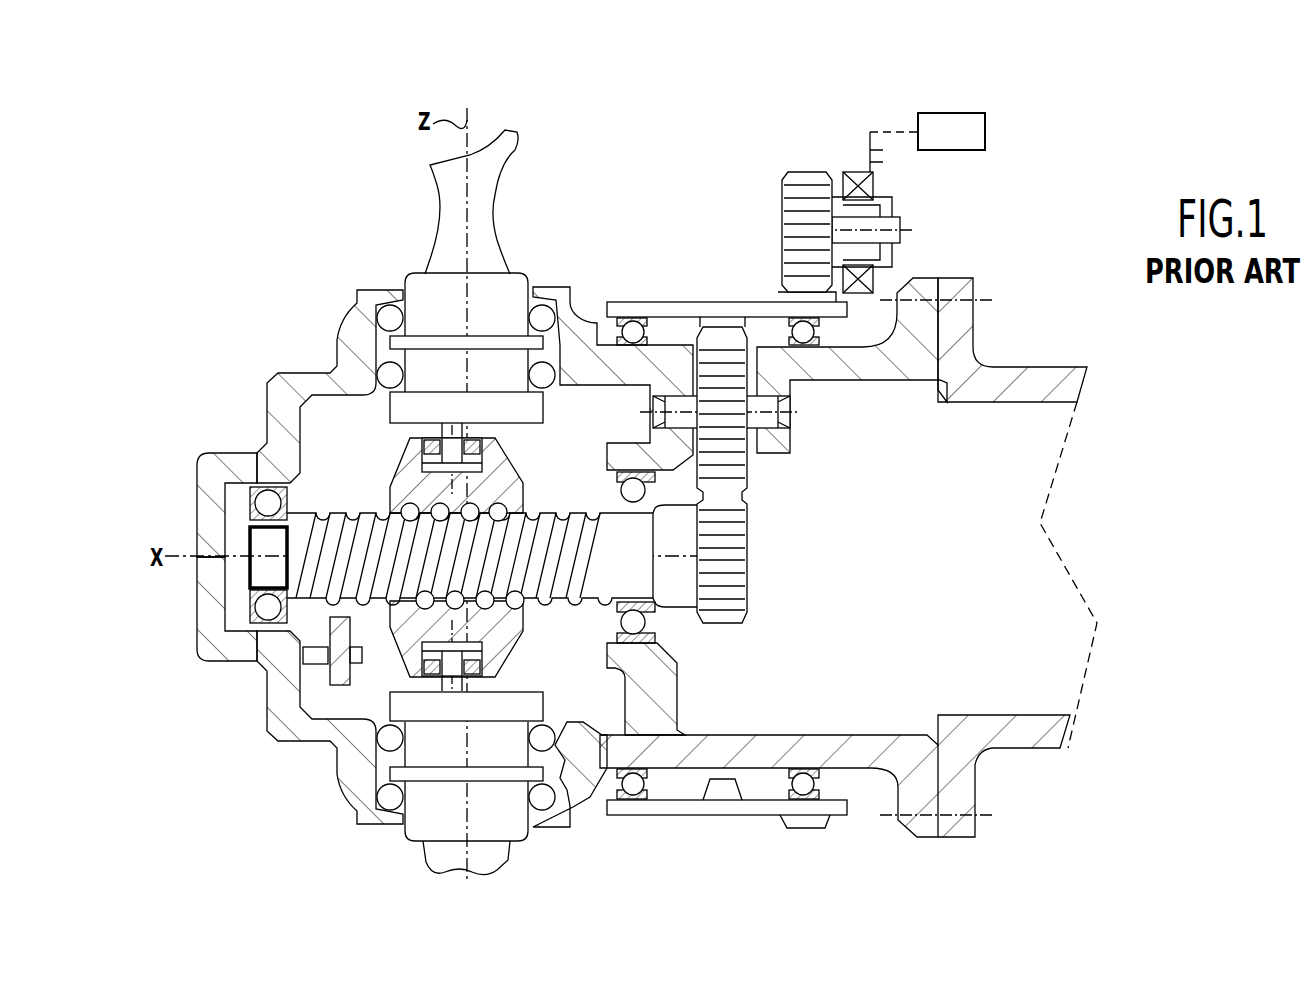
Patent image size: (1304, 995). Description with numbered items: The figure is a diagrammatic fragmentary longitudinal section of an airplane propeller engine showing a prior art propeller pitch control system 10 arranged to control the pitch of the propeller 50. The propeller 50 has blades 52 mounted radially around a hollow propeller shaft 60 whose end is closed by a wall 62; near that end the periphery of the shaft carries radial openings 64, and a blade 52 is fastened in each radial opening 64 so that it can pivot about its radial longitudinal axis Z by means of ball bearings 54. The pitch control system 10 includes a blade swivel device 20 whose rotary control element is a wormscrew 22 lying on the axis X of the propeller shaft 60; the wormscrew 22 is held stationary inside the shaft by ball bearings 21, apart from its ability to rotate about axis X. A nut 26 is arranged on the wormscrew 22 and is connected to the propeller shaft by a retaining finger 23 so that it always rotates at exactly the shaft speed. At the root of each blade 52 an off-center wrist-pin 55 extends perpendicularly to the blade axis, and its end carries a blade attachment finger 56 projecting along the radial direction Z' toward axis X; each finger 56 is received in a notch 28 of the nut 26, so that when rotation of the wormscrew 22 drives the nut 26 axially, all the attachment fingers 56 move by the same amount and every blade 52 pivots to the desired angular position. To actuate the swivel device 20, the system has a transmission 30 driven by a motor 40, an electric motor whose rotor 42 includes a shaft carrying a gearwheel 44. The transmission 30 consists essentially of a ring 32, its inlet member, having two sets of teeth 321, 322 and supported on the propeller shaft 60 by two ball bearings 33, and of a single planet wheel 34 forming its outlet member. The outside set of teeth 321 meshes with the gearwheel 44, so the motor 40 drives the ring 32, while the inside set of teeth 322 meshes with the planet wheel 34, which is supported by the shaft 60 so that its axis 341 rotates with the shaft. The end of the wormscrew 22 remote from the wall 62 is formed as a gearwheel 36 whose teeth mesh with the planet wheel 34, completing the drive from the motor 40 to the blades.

The propeller pitch control system 10 is at (189, 132).
The blade swivel device 20 is at (250, 352).
The ball bearings 21 is at (247, 620).
The wormscrew 22 is at (350, 490).
The retaining finger 23 is at (321, 645).
The nut 26 is at (510, 655).
The notch 28 is at (480, 462).
The transmission 30 is at (822, 448).
The ring 32 is at (686, 252).
The outside set of teeth 321 is at (790, 302).
The inside set of teeth 322 is at (713, 322).
The ball bearings 33 is at (634, 330).
The planet wheel 34 is at (737, 458).
The axis of planet wheel 341 is at (770, 405).
The gearwheel 36 is at (746, 626).
The motor 40 is at (866, 102).
The rotor 42 is at (900, 222).
The gearwheel 44 is at (806, 186).
The propeller 50 is at (410, 189).
The blade 52 is at (489, 181).
The ball bearings 54 is at (380, 320).
The wrist-pin 55 is at (532, 407).
The blade attachment finger 56 is at (440, 428).
The propeller shaft 60 is at (582, 306).
The wall 62 is at (202, 480).
The radial openings 64 is at (428, 298).